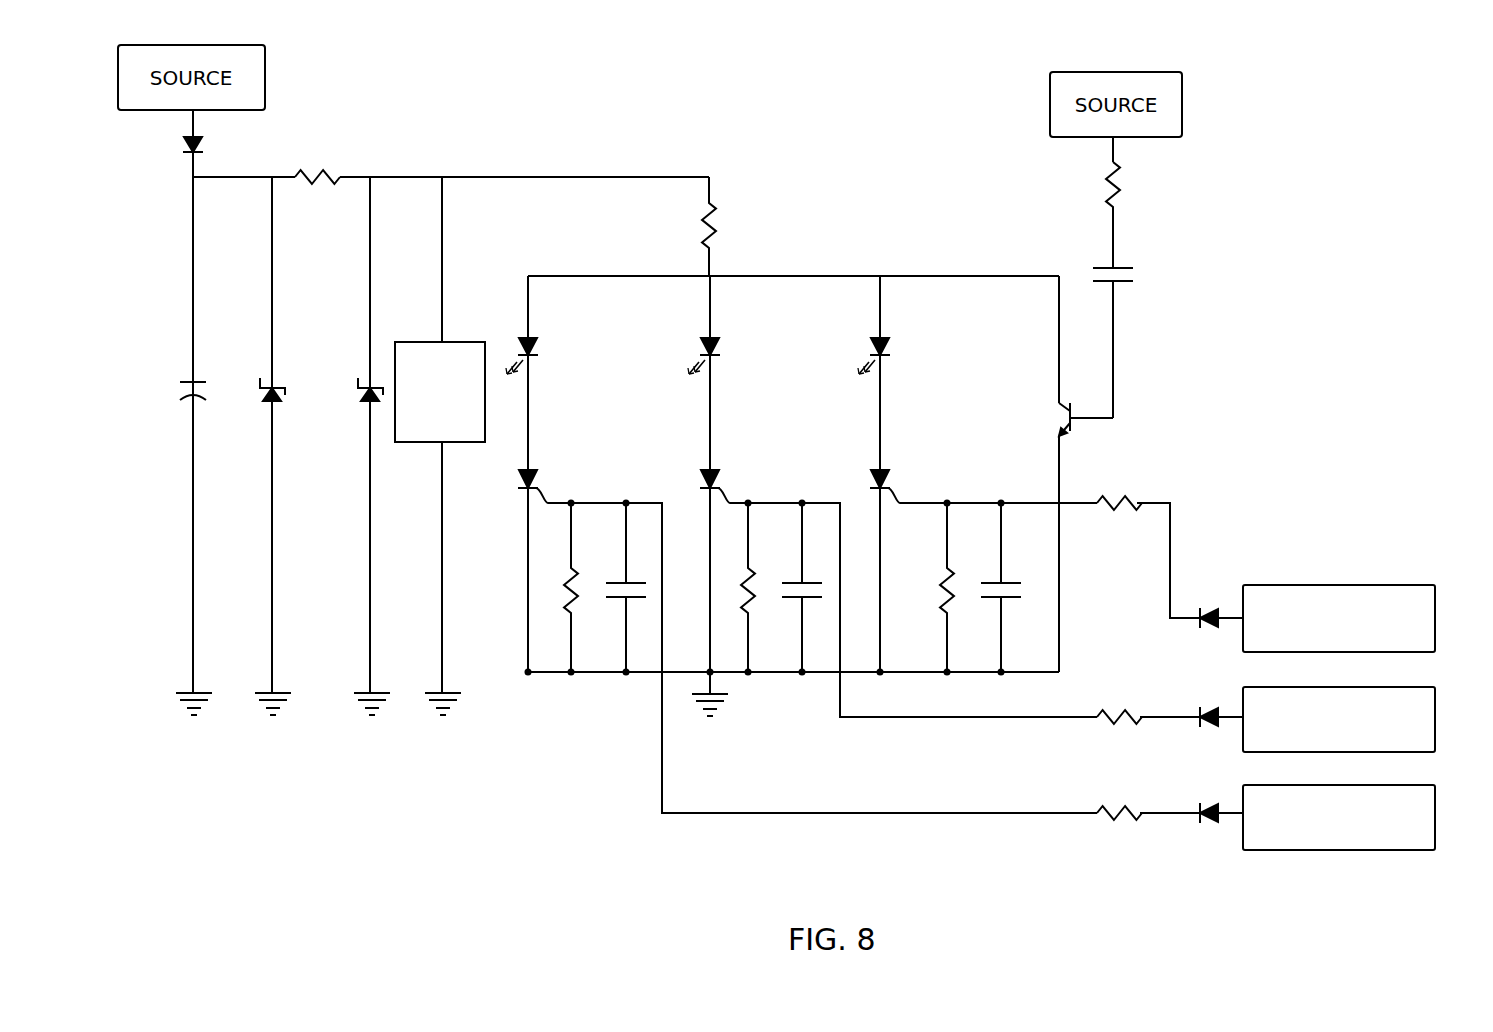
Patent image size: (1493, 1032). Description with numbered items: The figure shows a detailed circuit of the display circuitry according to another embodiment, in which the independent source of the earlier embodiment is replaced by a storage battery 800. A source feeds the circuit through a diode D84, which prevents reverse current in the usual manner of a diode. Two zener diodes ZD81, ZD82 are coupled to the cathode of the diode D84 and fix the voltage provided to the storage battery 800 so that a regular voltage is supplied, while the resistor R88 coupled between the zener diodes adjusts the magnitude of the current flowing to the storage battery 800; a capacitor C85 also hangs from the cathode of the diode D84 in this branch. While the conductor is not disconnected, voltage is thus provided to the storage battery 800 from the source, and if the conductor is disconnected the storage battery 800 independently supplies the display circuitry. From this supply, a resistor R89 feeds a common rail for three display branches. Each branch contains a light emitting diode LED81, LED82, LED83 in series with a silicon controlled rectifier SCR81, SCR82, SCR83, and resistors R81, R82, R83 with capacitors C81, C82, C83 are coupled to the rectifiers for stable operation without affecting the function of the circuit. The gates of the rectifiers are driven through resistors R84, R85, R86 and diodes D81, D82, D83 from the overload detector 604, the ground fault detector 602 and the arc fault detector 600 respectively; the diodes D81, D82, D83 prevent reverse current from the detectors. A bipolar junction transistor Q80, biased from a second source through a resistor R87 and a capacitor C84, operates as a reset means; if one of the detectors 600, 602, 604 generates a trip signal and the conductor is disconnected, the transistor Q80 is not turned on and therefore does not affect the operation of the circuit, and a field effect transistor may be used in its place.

The diode D84 is at (170, 145).
The resistor R88 is at (332, 162).
The resistor R89 is at (735, 226).
The capacitor C85 is at (176, 404).
The zener diode ZD81 is at (255, 402).
The zener diode ZD82 is at (350, 402).
The storage battery 800 is at (432, 342).
The light emitting diode LED81 is at (561, 356).
The light emitting diode LED82 is at (744, 356).
The light emitting diode LED83 is at (914, 356).
The silicon controlled rectifier SCR81 is at (567, 482).
The silicon controlled rectifier SCR82 is at (752, 482).
The silicon controlled rectifier SCR83 is at (920, 482).
The resistor R81 is at (555, 587).
The capacitor C81 is at (636, 587).
The resistor R82 is at (733, 587).
The capacitor C82 is at (813, 587).
The resistor R83 is at (932, 587).
The capacitor C83 is at (1012, 587).
The bipolar junction transistor Q80 is at (1061, 419).
The resistor R87 is at (1136, 215).
The capacitor C84 is at (1137, 341).
The resistor R84 is at (1131, 492).
The resistor R85 is at (1119, 700).
The resistor R86 is at (1119, 797).
The diode D81 is at (1210, 602).
The diode D82 is at (1210, 701).
The diode D83 is at (1210, 798).
The overload detector 604 is at (1436, 617).
The ground fault detector 602 is at (1436, 718).
The arc fault detector 600 is at (1436, 816).